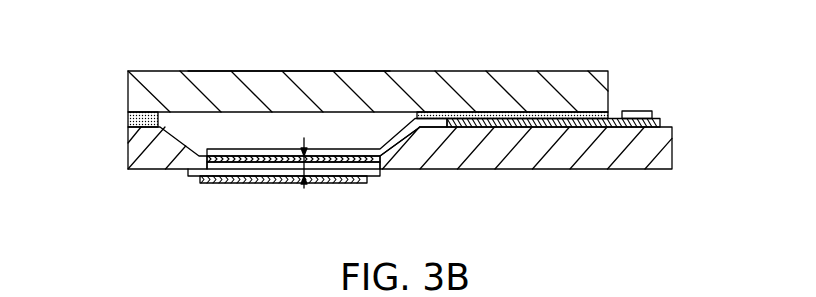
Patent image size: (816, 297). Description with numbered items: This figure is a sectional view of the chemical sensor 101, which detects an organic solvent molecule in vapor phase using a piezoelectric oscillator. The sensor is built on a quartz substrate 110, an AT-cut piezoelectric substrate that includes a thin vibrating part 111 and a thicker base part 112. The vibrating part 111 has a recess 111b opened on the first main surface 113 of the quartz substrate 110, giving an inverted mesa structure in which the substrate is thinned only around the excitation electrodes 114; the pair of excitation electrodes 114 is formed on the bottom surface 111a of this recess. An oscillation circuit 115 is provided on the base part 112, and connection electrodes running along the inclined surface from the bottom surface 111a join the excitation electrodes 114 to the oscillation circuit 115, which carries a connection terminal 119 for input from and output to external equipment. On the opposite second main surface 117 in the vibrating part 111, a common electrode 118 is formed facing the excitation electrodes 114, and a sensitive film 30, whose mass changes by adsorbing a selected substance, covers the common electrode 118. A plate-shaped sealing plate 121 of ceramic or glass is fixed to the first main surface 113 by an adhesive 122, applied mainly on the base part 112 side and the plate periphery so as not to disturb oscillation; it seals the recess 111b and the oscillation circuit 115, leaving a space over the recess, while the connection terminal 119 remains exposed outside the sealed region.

The chemical sensor 101 is at (144, 54).
The quartz substrate 110 is at (681, 147).
The vibrating part 111 is at (290, 162).
The bottom surface 111a is at (257, 165).
The recess 111b is at (188, 65).
The base part 112 is at (593, 158).
The first main surface 113 is at (135, 128).
The excitation electrodes 114 is at (227, 151).
The oscillation circuit 115 is at (512, 128).
The second main surface 117 is at (158, 170).
The common electrode 118 is at (323, 176).
The connection terminal 119 is at (638, 111).
The sealing plate 121 is at (470, 87).
The adhesive 122 is at (127, 117).
The sensitive film 30 is at (353, 181).